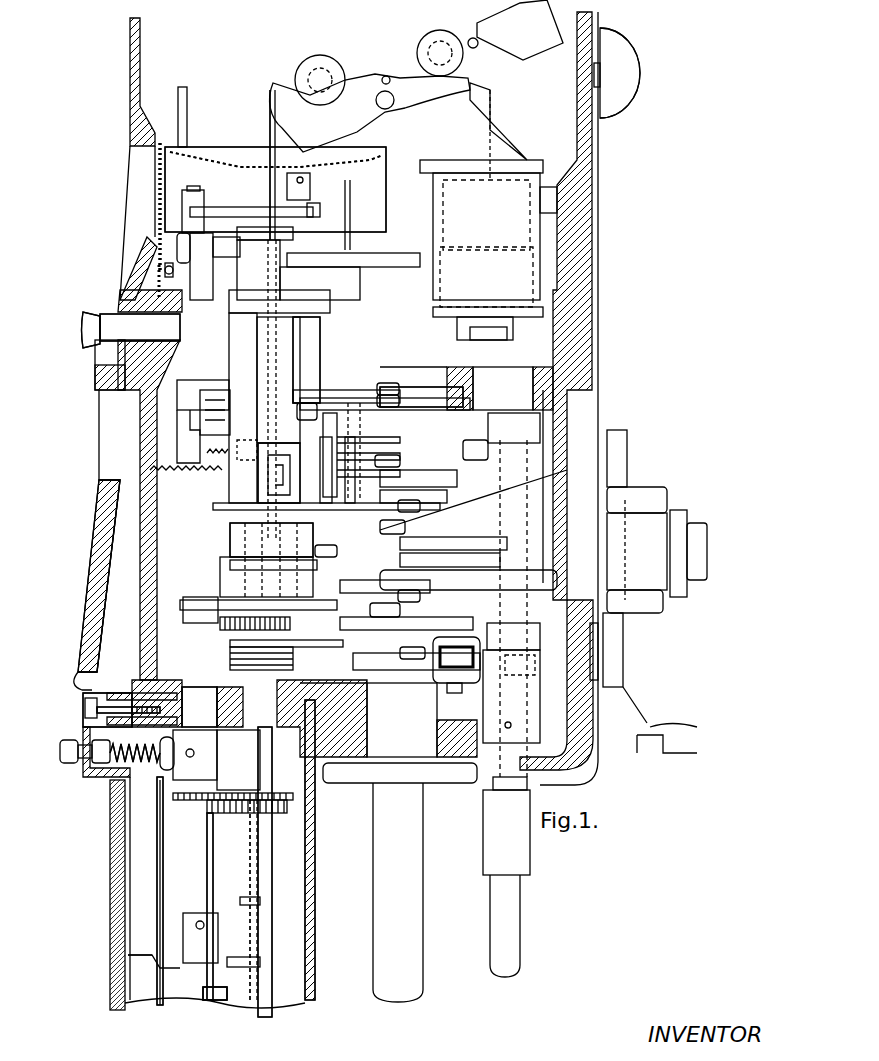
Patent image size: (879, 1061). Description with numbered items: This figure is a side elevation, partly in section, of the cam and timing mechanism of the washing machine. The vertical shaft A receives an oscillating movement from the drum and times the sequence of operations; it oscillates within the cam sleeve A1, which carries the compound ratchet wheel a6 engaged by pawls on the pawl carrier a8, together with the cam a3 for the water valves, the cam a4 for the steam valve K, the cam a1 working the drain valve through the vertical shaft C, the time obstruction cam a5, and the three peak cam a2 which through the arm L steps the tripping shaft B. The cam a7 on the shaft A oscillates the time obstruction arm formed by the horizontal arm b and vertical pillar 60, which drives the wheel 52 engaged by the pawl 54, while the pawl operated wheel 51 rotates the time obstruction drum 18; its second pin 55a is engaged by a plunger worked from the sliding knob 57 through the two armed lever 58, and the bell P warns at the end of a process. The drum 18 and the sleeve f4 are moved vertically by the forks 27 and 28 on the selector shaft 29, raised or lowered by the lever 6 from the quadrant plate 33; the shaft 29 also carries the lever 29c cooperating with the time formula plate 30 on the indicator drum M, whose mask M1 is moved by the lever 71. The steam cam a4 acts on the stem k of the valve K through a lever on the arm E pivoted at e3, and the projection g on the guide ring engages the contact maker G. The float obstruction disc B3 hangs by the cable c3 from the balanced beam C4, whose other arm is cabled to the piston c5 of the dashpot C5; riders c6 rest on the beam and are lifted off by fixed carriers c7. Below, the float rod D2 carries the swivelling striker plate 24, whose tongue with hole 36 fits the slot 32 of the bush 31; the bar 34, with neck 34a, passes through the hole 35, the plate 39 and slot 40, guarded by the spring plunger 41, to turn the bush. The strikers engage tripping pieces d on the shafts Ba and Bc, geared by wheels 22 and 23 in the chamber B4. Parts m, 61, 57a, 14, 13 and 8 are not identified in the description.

The rider c6 is at (312, 68).
The balanced beam C4 is at (492, 104).
The fixed carrier c7 is at (398, 104).
The cable c3 is at (270, 130).
The bell P is at (610, 108).
The mask M1 is at (160, 172).
The formula indicator drum M is at (286, 189).
The housing lining m is at (162, 213).
The selector shaft 29 is at (198, 192).
The lever 29c is at (251, 221).
The pawl operated wheel 51 is at (240, 232).
The time formula plate 30 is at (305, 182).
The pawl 54 is at (363, 204).
The nut 61 is at (313, 215).
The wheel 52 is at (405, 257).
The two armed lever 58 is at (177, 242).
The lever 71 is at (163, 270).
The second pin 55a is at (232, 258).
The sliding knob 57 is at (102, 343).
The spring 57a is at (186, 482).
The fork 27 is at (200, 387).
The horizontal arm b is at (112, 945).
The vertical pillar 60 is at (309, 360).
The nut 14 is at (330, 398).
The pawl carrier a8 is at (335, 427).
The time obstruction drum 18 is at (215, 438).
The rod 13 is at (318, 468).
The rod 8 is at (320, 480).
The projection g is at (279, 473).
The contact maker G is at (235, 457).
The float obstruction disc B3 is at (225, 508).
The sleeve f4 is at (230, 557).
The quadrant plate 33 is at (208, 562).
The fork 28 is at (175, 600).
The arm E is at (470, 532).
The steam control cam a4 is at (378, 552).
The time obstruction cam a5 is at (389, 526).
The compound ratchet wheel a6 is at (435, 482).
The cam a7 is at (463, 414).
The pivot e3 is at (468, 579).
The cam a1 is at (367, 606).
The cam a2 is at (414, 616).
The cam sleeve A1 is at (440, 658).
The arm L is at (251, 638).
The cam a3 is at (360, 665).
The lever 6 is at (103, 576).
The bar 34 is at (160, 610).
The neck 34a is at (70, 757).
The bush 31 is at (199, 707).
The hole 36 is at (88, 747).
The plate 39 is at (95, 732).
The slot 40 is at (85, 767).
The spring controlled plunger 41 is at (148, 770).
The hole 35 is at (197, 754).
The tripping shaft B is at (264, 750).
The gear wheel 22 is at (230, 802).
The vertical slot 32 is at (185, 772).
The gear wheel 23 is at (300, 802).
The shaft Bc is at (210, 842).
The shaft Ba is at (255, 849).
The tripping piece d is at (245, 897).
The chamber B4 is at (300, 932).
The swivelling plate 24 is at (190, 920).
The float rod D2 is at (194, 1007).
The vertical shaft A is at (398, 892).
The vertical shaft C is at (538, 459).
The spring controlled stem k is at (511, 662).
The steam valve K is at (637, 551).
The piston c5 is at (447, 240).
The dashpot device C5 is at (486, 236).